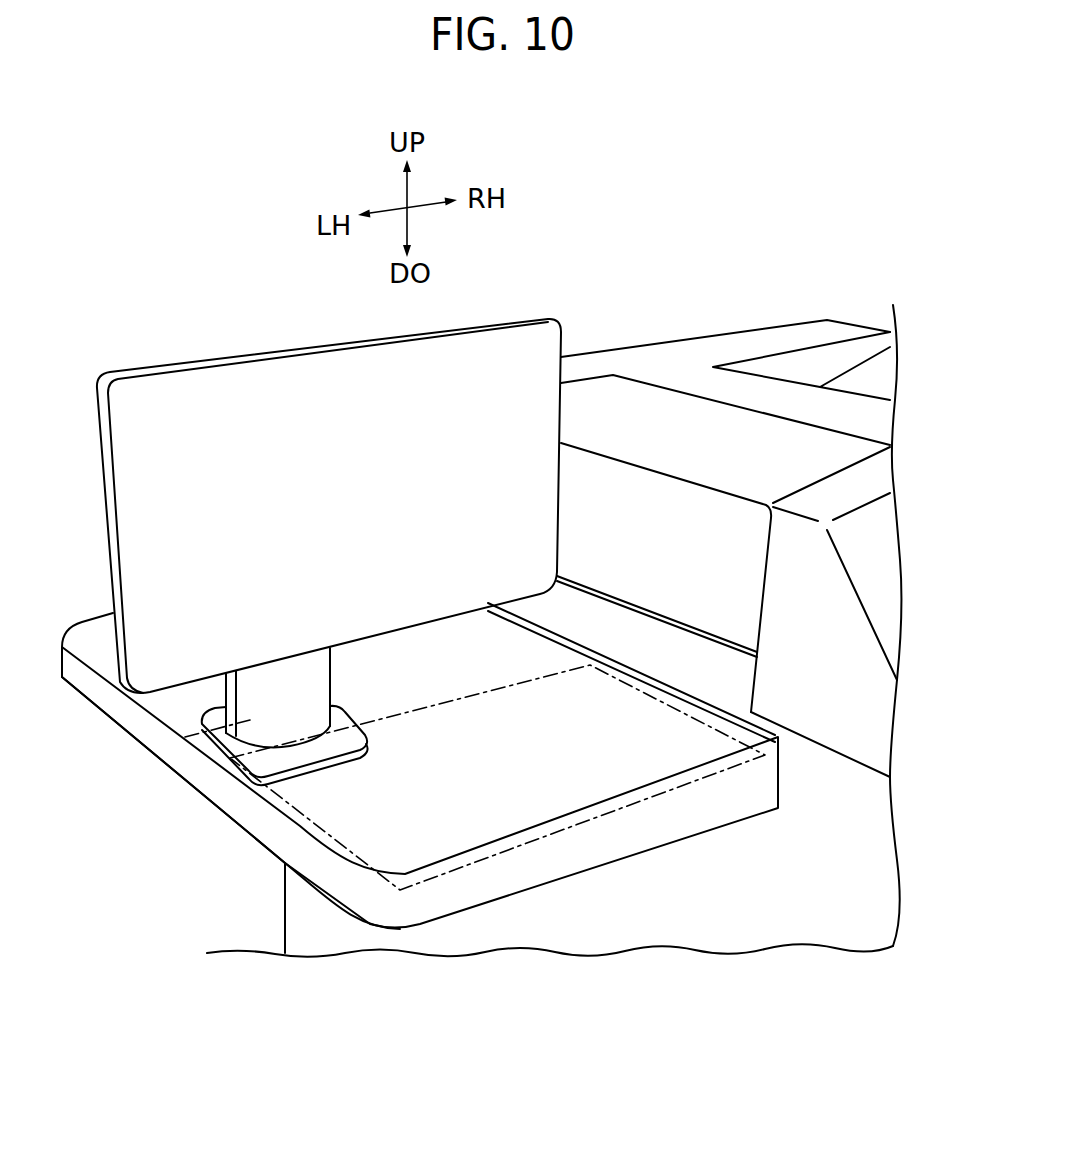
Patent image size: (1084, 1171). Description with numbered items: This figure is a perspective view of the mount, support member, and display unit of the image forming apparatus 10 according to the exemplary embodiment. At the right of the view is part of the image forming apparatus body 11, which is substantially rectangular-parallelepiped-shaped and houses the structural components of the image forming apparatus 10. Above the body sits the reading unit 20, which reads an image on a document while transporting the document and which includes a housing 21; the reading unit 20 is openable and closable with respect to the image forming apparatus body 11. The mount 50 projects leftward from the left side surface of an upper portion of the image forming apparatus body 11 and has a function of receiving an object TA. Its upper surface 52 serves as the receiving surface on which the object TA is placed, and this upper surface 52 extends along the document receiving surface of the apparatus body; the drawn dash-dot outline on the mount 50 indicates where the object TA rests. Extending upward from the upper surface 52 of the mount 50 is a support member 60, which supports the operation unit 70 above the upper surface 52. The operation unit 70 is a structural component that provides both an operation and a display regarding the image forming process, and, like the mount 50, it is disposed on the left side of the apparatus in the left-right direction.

The image forming apparatus 10 is at (836, 206).
The image forming apparatus body 11 is at (838, 749).
The reading unit 20 is at (679, 341).
The housing 21 is at (631, 346).
The mount 50 is at (586, 877).
The upper surface 52 is at (530, 647).
The support member 60 is at (263, 712).
The operation unit 70 is at (186, 357).
The object TA is at (652, 800).